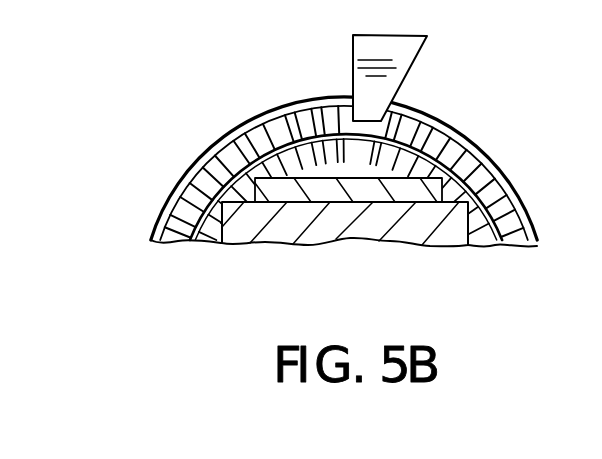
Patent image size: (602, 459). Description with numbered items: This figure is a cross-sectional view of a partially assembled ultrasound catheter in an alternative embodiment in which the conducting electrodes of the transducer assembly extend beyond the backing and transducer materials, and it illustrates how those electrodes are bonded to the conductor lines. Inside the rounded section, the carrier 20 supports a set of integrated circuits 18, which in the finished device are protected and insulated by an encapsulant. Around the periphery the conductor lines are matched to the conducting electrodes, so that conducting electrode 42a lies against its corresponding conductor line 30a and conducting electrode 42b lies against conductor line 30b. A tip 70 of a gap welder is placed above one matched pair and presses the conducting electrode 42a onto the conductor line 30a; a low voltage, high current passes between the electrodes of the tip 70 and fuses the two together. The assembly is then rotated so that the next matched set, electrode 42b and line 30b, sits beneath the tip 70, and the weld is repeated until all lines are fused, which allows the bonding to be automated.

The integrated circuits 18 is at (503, 171).
The carrier 20 is at (173, 200).
The conductor line 30a is at (290, 104).
The conductor line 30b is at (412, 118).
The conducting electrode 42a is at (368, 154).
The conducting electrode 42b is at (412, 110).
The tip of a gap welder 70 is at (420, 52).